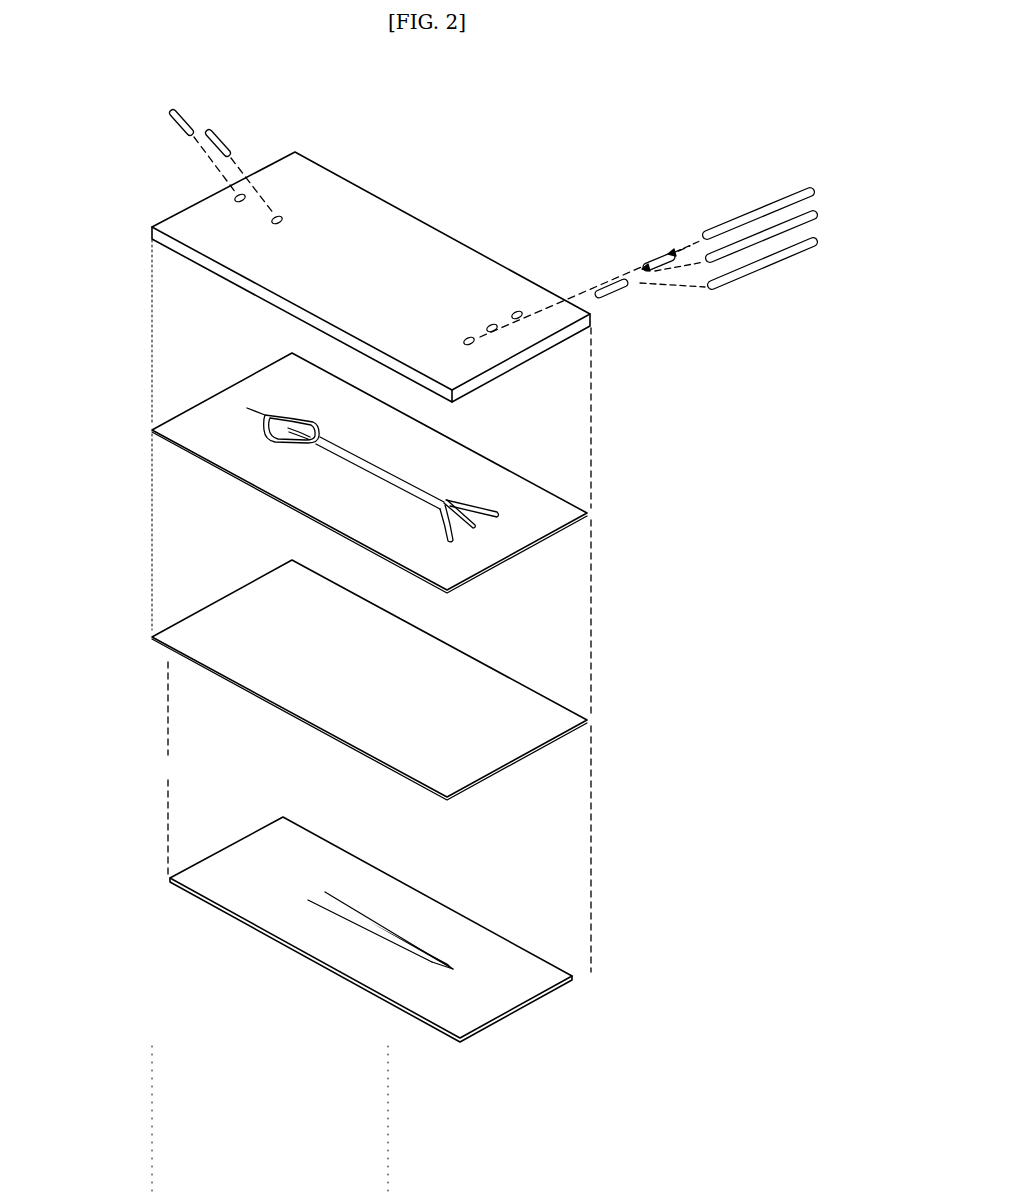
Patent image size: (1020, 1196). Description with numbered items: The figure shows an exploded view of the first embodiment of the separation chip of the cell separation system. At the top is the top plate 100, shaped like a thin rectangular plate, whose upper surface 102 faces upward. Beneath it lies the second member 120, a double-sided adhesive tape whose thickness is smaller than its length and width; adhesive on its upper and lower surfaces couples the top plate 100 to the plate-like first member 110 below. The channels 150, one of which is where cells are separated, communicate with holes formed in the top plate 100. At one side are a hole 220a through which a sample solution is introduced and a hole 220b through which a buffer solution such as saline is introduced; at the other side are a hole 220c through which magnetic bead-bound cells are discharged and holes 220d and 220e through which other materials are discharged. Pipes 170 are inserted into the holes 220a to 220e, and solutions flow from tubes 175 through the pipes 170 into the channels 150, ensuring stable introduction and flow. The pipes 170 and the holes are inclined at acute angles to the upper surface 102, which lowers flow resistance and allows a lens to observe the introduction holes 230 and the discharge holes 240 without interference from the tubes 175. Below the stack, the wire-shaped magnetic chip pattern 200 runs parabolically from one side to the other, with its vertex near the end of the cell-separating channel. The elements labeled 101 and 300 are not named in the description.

The top plate 100 is at (155, 191).
The upper substrate 101 is at (590, 333).
The upper surface of the top plate 102 is at (472, 246).
The first member 110 is at (575, 762).
The second member 120 is at (575, 553).
The channels 150 is at (315, 465).
The pipes 170 is at (660, 250).
The tubes 175 is at (772, 200).
The magnetic chip pattern 200 is at (358, 927).
The hole 220a is at (237, 197).
The hole 220b is at (280, 217).
The hole 220c is at (492, 328).
The hole 220d is at (469, 341).
The hole 220e is at (517, 315).
The introduction holes 230 is at (274, 188).
The discharge holes 240 is at (518, 294).
The base substrate 300 is at (99, 783).